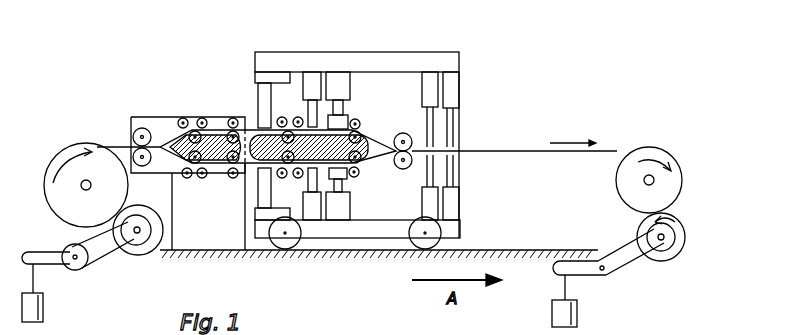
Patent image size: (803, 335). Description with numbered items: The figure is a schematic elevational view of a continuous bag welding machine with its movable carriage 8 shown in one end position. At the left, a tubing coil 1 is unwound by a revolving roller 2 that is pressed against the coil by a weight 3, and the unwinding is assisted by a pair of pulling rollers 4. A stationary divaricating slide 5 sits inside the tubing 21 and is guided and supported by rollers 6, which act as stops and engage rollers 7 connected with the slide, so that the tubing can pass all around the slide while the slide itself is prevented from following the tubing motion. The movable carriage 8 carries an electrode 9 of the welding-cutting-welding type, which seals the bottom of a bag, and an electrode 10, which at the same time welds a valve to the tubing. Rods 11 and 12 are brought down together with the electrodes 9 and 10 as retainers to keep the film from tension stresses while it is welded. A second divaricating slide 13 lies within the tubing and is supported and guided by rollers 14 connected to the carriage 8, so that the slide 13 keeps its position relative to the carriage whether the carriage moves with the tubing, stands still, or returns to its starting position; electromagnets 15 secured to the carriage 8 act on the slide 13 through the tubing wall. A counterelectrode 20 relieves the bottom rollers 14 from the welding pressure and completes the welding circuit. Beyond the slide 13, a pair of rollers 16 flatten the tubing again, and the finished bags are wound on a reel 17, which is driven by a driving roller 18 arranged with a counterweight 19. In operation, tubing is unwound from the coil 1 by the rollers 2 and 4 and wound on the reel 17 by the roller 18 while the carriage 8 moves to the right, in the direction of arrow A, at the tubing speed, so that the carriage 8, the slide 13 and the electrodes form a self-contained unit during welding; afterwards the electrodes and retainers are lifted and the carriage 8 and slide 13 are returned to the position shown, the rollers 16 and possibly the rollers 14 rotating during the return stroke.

The tubing coil 1 is at (97, 163).
The revolving roller 2 is at (147, 252).
The weight 3 is at (46, 311).
The pulling rollers 4 is at (147, 140).
The stationary divaricating slide 5 is at (218, 153).
The rollers 6 is at (230, 118).
The rollers 7 is at (187, 160).
The movable carriage 8 is at (468, 227).
The electrode 9 is at (432, 95).
The electrode 10 is at (338, 88).
The rod 11 is at (312, 80).
The rod 12 is at (452, 101).
The divaricating slide 13 is at (348, 120).
The rollers 14 is at (298, 116).
The electromagnets 15 is at (265, 98).
The rollers 16 is at (412, 148).
The reel 17 is at (653, 157).
The driving roller 18 is at (668, 258).
The counterweight 19 is at (578, 312).
The counterelectrode 20 is at (340, 210).
The tubing 21 is at (627, 143).